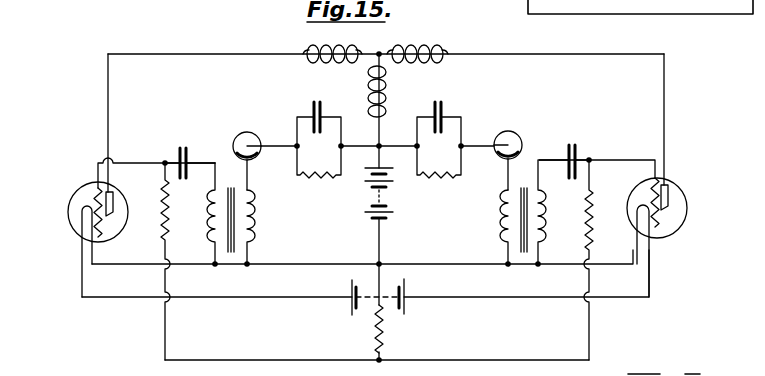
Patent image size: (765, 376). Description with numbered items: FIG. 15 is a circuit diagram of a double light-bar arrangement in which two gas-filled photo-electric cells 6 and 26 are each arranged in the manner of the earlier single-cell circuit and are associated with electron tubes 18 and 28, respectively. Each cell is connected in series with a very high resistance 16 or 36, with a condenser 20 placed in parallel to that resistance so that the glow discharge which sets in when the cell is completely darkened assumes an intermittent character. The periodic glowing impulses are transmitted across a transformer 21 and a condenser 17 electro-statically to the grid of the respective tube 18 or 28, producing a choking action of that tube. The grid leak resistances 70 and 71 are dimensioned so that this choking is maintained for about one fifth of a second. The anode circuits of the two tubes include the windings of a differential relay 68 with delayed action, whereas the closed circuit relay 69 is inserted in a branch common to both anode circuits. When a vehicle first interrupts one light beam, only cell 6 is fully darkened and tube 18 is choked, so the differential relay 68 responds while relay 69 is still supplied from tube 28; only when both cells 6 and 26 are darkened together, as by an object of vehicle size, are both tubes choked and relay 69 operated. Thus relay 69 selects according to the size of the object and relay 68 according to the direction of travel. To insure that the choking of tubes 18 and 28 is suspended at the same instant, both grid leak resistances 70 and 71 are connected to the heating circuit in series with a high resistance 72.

The photo-electric cell 6 is at (246, 132).
The resistance 16 is at (319, 175).
The condenser 17 is at (180, 154).
The electron tube 18 is at (65, 211).
The condenser 20 is at (312, 111).
The transformer 21 is at (255, 220).
The photo-electric cell 26 is at (513, 131).
The electron tube 28 is at (688, 208).
The resistance 36 is at (439, 174).
The differential relay 68 is at (406, 45).
The closed circuit relay 69 is at (386, 100).
The grid leak resistance 70 is at (160, 221).
The grid leak resistance 71 is at (594, 214).
The high resistance 72 is at (392, 334).